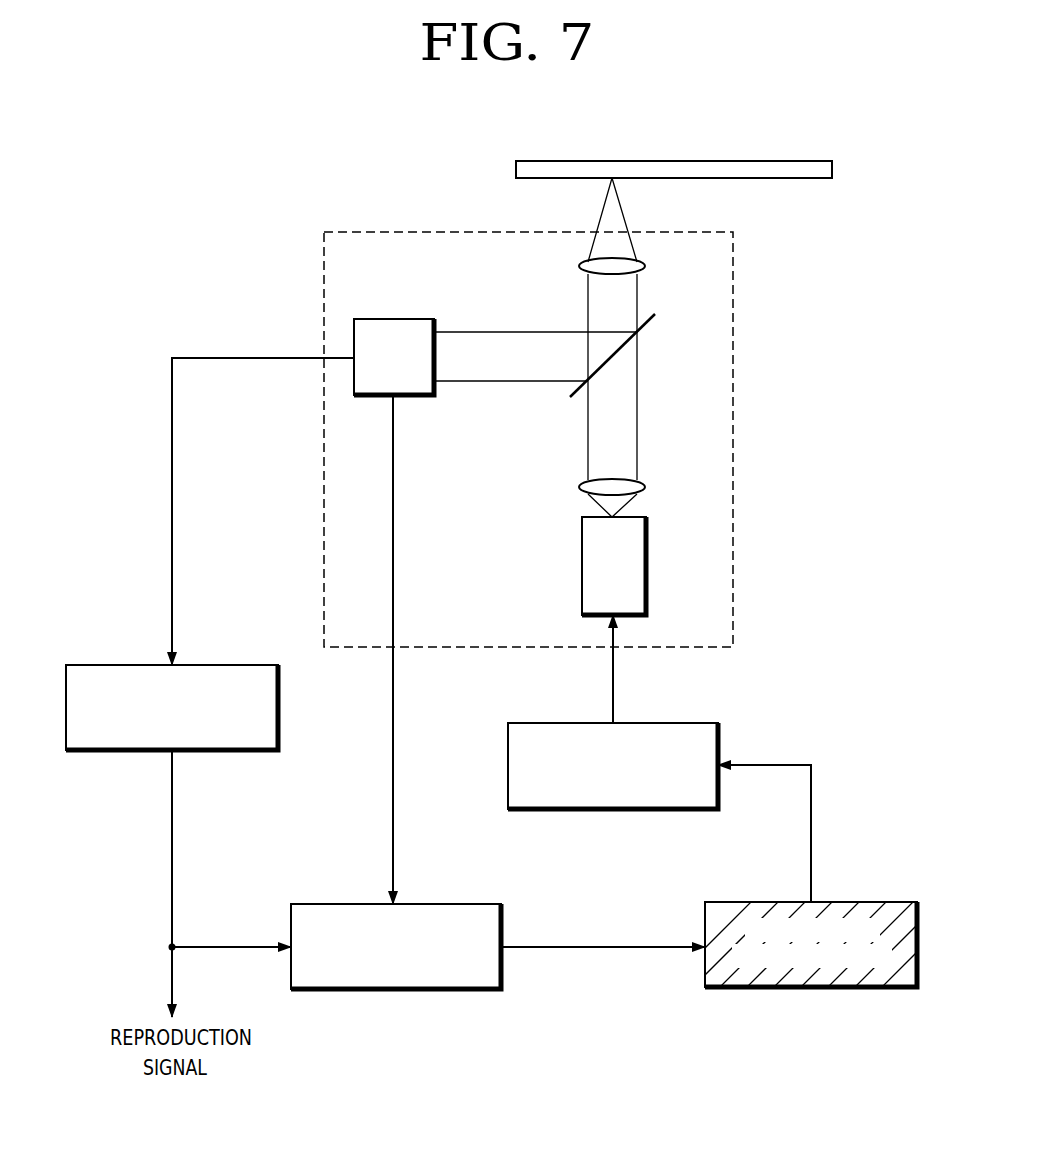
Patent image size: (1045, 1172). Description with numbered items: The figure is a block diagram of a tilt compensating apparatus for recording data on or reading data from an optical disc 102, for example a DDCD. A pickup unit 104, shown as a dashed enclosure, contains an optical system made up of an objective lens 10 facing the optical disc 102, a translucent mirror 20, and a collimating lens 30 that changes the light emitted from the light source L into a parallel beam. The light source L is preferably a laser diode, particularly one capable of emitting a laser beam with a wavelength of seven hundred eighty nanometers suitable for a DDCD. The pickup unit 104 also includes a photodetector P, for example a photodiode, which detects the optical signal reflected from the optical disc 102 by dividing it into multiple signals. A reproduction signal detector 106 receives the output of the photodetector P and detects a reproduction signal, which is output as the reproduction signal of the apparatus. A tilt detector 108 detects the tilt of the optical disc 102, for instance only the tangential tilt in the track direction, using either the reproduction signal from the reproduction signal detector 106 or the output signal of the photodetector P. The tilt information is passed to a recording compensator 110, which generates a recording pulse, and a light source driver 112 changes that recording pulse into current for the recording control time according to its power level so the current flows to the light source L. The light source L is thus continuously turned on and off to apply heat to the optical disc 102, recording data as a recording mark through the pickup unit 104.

The optical disc 102 is at (760, 160).
The pickup unit 104 is at (733, 440).
The objective lens 10 is at (645, 265).
The translucent mirror 20 is at (612, 360).
The collimating lens 30 is at (645, 487).
The light source L is at (582, 561).
The photodetector P is at (392, 319).
The reproduction signal detector 106 is at (232, 665).
The tilt detector 108 is at (455, 904).
The recording compensator 110 is at (872, 902).
The light source driver 112 is at (675, 723).